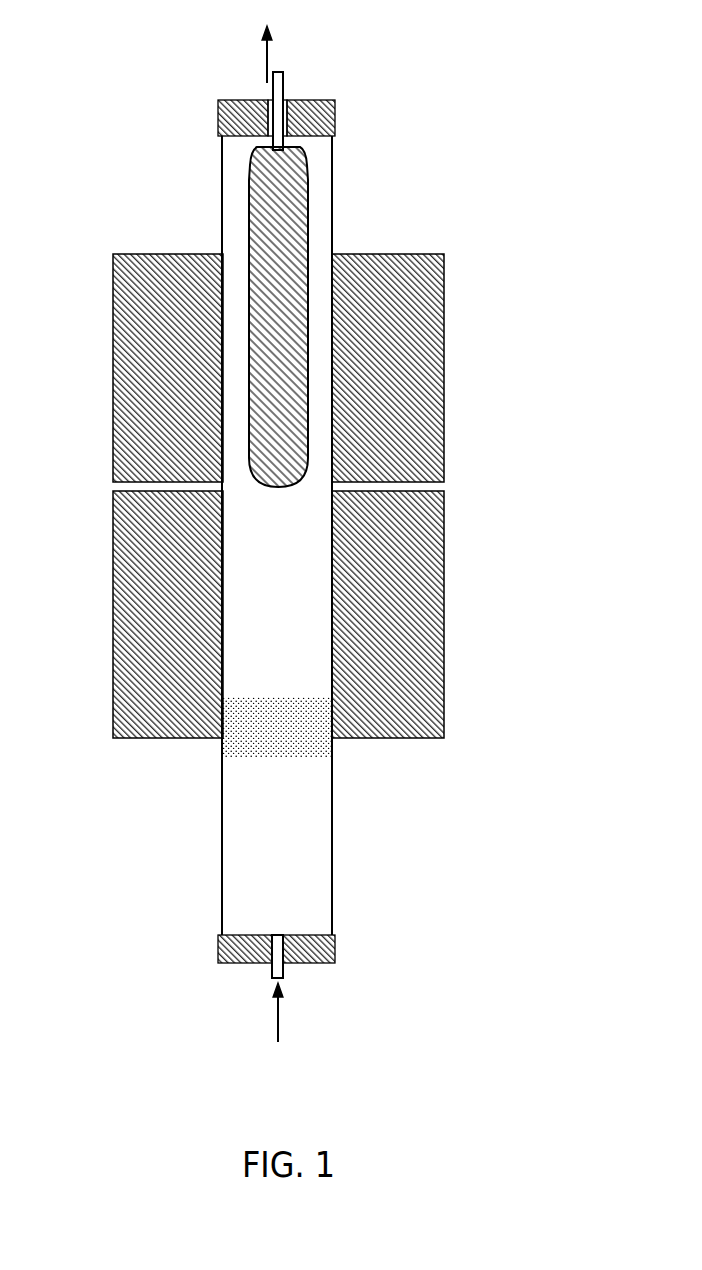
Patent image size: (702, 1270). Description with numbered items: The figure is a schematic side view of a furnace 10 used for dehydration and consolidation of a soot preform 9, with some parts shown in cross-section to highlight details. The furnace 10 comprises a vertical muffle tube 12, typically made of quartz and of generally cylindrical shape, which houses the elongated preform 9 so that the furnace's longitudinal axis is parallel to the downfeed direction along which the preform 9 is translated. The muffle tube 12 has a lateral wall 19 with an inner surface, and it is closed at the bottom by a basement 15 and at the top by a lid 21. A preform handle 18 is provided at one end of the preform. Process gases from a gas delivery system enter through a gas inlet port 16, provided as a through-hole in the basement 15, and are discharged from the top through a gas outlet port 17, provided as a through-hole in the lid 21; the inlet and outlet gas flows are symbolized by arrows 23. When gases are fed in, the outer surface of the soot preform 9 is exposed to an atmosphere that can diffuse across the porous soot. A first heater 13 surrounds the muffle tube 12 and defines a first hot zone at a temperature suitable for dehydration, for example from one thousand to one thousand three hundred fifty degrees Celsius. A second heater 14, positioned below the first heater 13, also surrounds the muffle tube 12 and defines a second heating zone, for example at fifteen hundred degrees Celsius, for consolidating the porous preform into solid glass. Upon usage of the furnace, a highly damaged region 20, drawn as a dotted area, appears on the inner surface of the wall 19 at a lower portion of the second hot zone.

The soot preform 9 is at (248, 231).
The furnace 10 is at (477, 132).
The muffle tube 12 is at (221, 853).
The first heater 13 is at (446, 367).
The second heater 14 is at (446, 633).
The basement 15 is at (218, 942).
The gas inlet port 16 is at (284, 969).
The gas outlet port 17 is at (286, 100).
The preform handle 18 is at (285, 80).
The lateral wall 19 is at (333, 890).
The damaged region 20 is at (222, 750).
The lid 21 is at (335, 114).
The arrows 23 is at (264, 59).